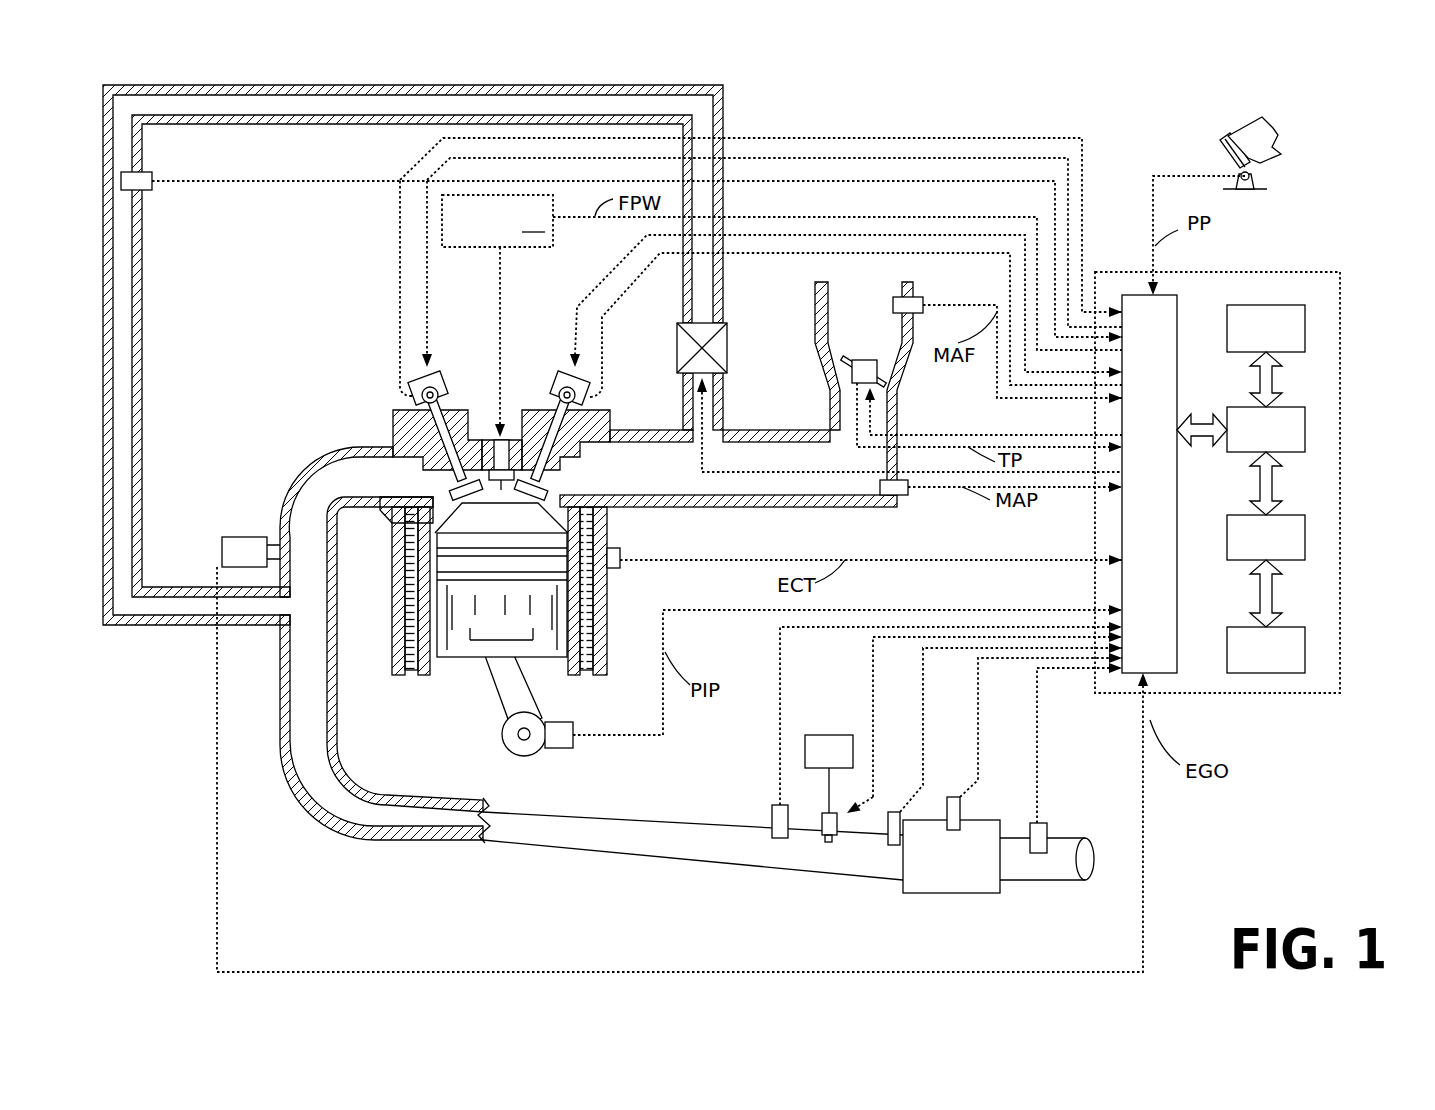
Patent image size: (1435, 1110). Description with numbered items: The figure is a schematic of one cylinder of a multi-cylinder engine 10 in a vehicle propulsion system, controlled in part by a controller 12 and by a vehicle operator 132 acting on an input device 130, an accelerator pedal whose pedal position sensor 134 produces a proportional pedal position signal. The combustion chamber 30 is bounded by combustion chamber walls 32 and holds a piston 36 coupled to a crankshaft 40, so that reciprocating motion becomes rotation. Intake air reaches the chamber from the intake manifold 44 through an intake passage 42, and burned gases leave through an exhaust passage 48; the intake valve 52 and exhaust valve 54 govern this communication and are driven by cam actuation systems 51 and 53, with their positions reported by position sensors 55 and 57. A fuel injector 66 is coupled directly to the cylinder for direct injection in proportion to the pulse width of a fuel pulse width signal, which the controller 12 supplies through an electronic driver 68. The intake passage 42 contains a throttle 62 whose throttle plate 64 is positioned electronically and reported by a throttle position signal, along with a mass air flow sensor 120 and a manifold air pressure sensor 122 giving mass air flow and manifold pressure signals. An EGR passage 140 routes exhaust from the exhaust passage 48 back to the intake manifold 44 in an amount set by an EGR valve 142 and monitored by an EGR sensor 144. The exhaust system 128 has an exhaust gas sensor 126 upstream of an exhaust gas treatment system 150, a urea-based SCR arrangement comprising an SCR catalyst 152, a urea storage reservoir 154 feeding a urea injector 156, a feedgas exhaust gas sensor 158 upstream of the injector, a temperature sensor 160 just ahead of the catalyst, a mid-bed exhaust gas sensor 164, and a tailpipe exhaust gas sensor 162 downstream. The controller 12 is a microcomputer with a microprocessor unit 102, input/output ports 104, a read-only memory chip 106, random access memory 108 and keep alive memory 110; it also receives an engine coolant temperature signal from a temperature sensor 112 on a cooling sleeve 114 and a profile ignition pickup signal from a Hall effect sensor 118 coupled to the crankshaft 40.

The engine 10 is at (322, 358).
The controller 12 is at (1330, 272).
The combustion chamber 30 is at (400, 628).
The combustion chamber walls 32 is at (437, 667).
The piston 36 is at (482, 625).
The crankshaft 40 is at (512, 756).
The intake passage 42 is at (872, 335).
The intake manifold 44 is at (692, 486).
The exhaust passage 48 is at (367, 487).
The cam actuation system 51 is at (562, 376).
The intake valve 52 is at (584, 466).
The cam actuation system 53 is at (435, 372).
The exhaust valve 54 is at (440, 478).
The position sensor 55 is at (596, 394).
The position sensor 57 is at (412, 392).
The throttle 62 is at (886, 374).
The throttle plate 64 is at (842, 363).
The fuel injector 66 is at (513, 440).
The electronic driver 68 is at (782, 272).
The microprocessor unit 102 is at (1307, 422).
The input/output ports 104 is at (1180, 305).
The read-only memory chip 106 is at (1307, 325).
The random access memory 108 is at (1307, 538).
The keep alive memory 110 is at (1307, 648).
The temperature sensor 112 is at (620, 552).
The cooling sleeve 114 is at (590, 625).
The Hall effect sensor 118 is at (553, 750).
The mass air flow sensor 120 is at (915, 297).
The manifold air pressure sensor 122 is at (906, 496).
The exhaust gas sensor 126 is at (222, 540).
The exhaust system 128 is at (313, 851).
The input device 130 is at (1222, 150).
The vehicle operator 132 is at (1277, 133).
The pedal position sensor 134 is at (1252, 180).
The EGR passage 140 is at (410, 86).
The EGR valve 142 is at (727, 348).
The EGR sensor 144 is at (152, 190).
The exhaust gas treatment system 150 is at (1003, 910).
The SCR catalyst 152 is at (970, 870).
The urea storage reservoir 154 is at (846, 766).
The urea injector 156 is at (824, 813).
The feedgas exhaust gas sensor 158 is at (776, 805).
The temperature sensor 160 is at (892, 812).
The tailpipe exhaust gas sensor 162 is at (1040, 826).
The mid-bed exhaust gas sensor 164 is at (948, 797).